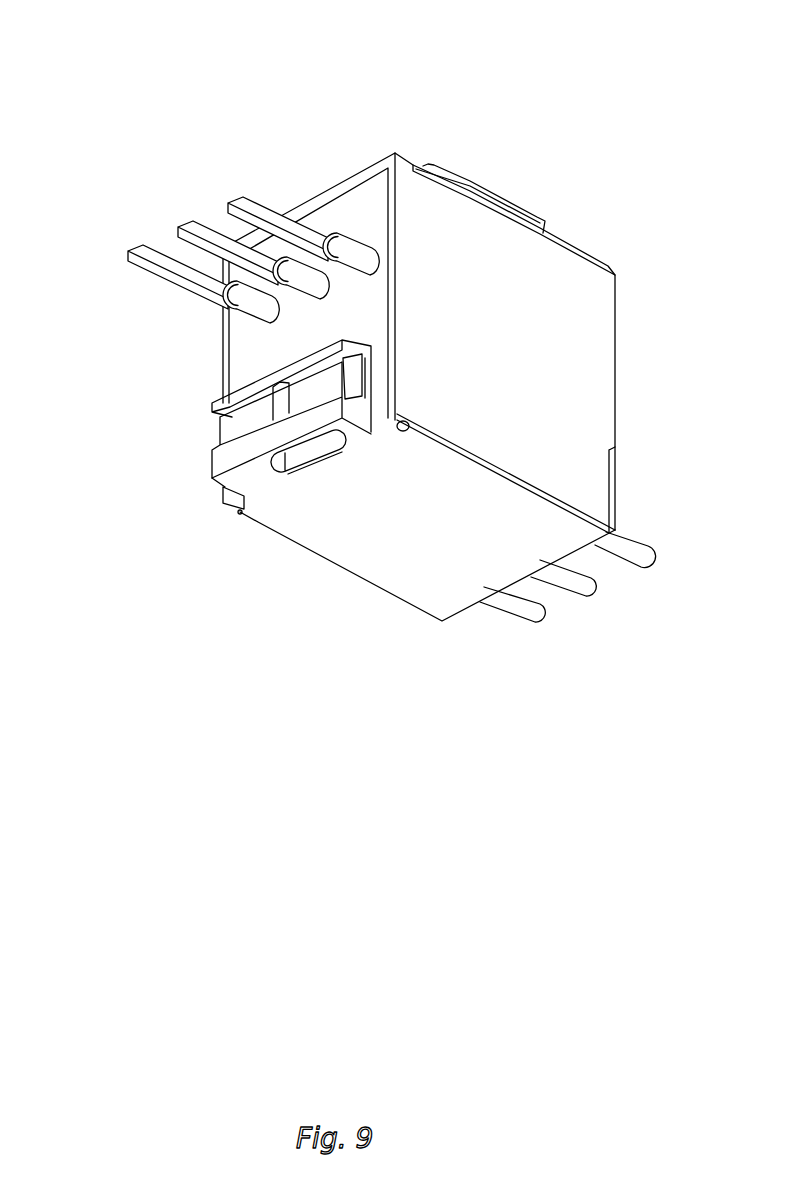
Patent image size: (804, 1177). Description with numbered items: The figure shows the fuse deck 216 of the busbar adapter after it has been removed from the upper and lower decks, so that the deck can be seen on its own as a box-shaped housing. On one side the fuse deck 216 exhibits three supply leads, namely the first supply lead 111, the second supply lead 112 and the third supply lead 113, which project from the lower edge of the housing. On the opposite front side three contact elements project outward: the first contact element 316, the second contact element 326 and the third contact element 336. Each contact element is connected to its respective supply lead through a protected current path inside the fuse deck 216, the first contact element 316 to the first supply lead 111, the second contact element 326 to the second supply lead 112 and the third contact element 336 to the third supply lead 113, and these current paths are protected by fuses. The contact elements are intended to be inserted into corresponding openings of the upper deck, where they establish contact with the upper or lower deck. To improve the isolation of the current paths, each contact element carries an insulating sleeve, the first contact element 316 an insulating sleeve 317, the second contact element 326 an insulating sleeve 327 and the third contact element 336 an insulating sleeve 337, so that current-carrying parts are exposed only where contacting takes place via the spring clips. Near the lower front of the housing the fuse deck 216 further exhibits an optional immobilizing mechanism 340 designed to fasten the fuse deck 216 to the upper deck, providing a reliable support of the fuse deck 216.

The fuse deck 216 is at (599, 82).
The immobilizing mechanism 340 is at (168, 490).
The first contact element 316 is at (258, 199).
The insulating sleeve 317 is at (356, 238).
The second contact element 326 is at (184, 224).
The insulating sleeve 327 is at (293, 293).
The third contact element 336 is at (142, 246).
The insulating sleeve 337 is at (236, 312).
The first supply lead 111 is at (643, 553).
The second supply lead 112 is at (590, 582).
The third supply lead 113 is at (533, 615).